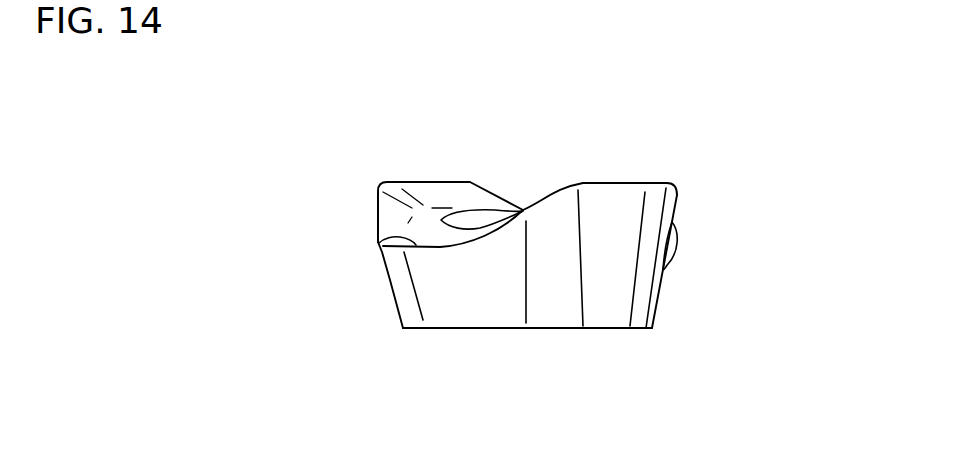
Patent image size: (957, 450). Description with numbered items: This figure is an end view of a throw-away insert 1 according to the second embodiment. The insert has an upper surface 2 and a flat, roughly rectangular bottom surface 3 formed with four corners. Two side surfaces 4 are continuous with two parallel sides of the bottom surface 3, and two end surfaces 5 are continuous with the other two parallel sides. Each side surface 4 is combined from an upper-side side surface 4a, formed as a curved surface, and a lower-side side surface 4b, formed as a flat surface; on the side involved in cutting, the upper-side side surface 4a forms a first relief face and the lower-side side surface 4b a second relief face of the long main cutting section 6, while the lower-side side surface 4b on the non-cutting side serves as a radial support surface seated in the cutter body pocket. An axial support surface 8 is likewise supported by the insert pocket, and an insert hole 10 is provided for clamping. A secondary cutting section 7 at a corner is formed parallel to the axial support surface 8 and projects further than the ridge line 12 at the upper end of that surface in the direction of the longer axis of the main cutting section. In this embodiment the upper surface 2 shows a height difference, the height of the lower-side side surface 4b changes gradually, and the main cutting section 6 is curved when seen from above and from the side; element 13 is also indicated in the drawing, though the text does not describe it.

The throw-away insert 1 is at (645, 134).
The upper surface 2 is at (448, 192).
The bottom surface 3 is at (438, 333).
The side surface 4 is at (548, 281).
The upper-side side surface 4a is at (708, 255).
The lower-side side surface 4b is at (397, 307).
The end surface 5 is at (608, 305).
The main cutting section 6 is at (374, 212).
The secondary cutting section 7 is at (415, 182).
The axial support surface 8 is at (473, 303).
The insert hole 10 is at (484, 212).
The ridge line 12 is at (378, 242).
The curved cutting edge 13 is at (540, 197).